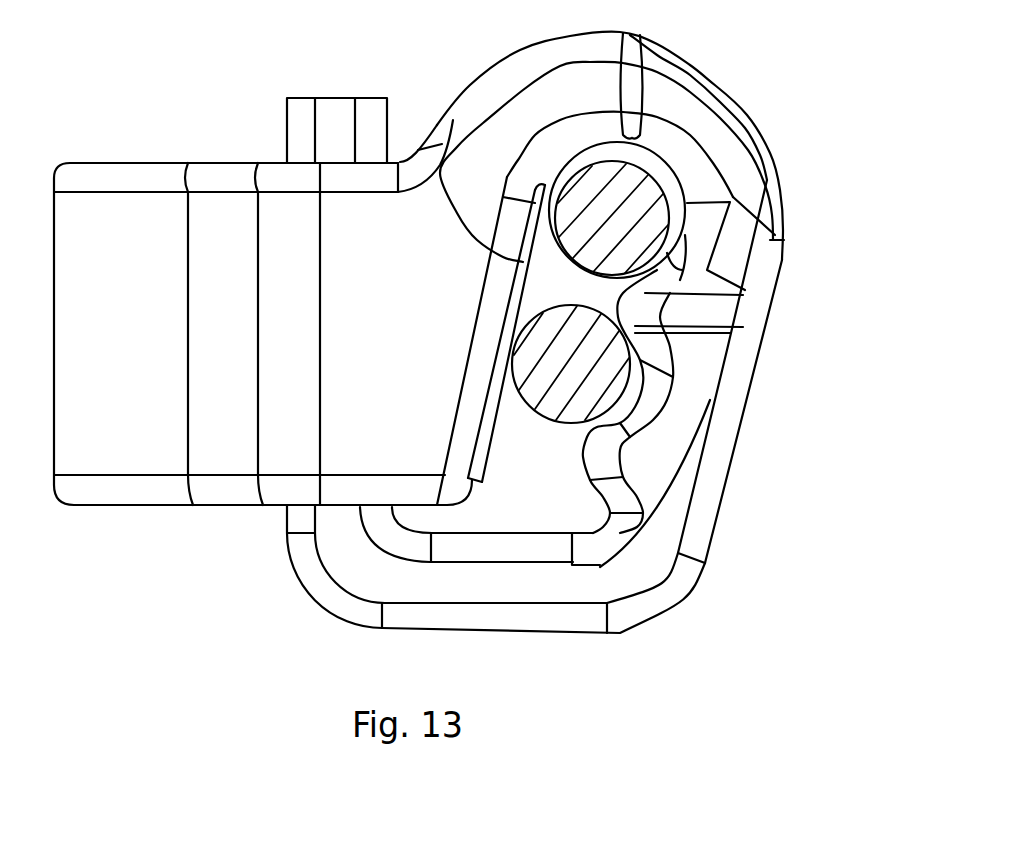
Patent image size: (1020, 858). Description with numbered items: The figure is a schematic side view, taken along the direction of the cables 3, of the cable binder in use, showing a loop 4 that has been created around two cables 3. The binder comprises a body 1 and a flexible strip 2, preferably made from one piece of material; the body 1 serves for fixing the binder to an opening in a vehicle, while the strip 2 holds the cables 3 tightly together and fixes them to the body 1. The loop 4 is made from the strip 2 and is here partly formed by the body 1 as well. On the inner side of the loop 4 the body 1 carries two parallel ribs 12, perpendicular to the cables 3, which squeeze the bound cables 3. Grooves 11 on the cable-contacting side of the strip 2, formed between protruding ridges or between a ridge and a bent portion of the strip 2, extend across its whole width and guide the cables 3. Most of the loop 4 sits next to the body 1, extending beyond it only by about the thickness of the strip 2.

The body 1 is at (100, 455).
The flexible strip 2 is at (540, 583).
The cable 3 is at (627, 205).
The loop 4 is at (530, 460).
The groove 11 is at (773, 270).
The rib 12 is at (442, 175).